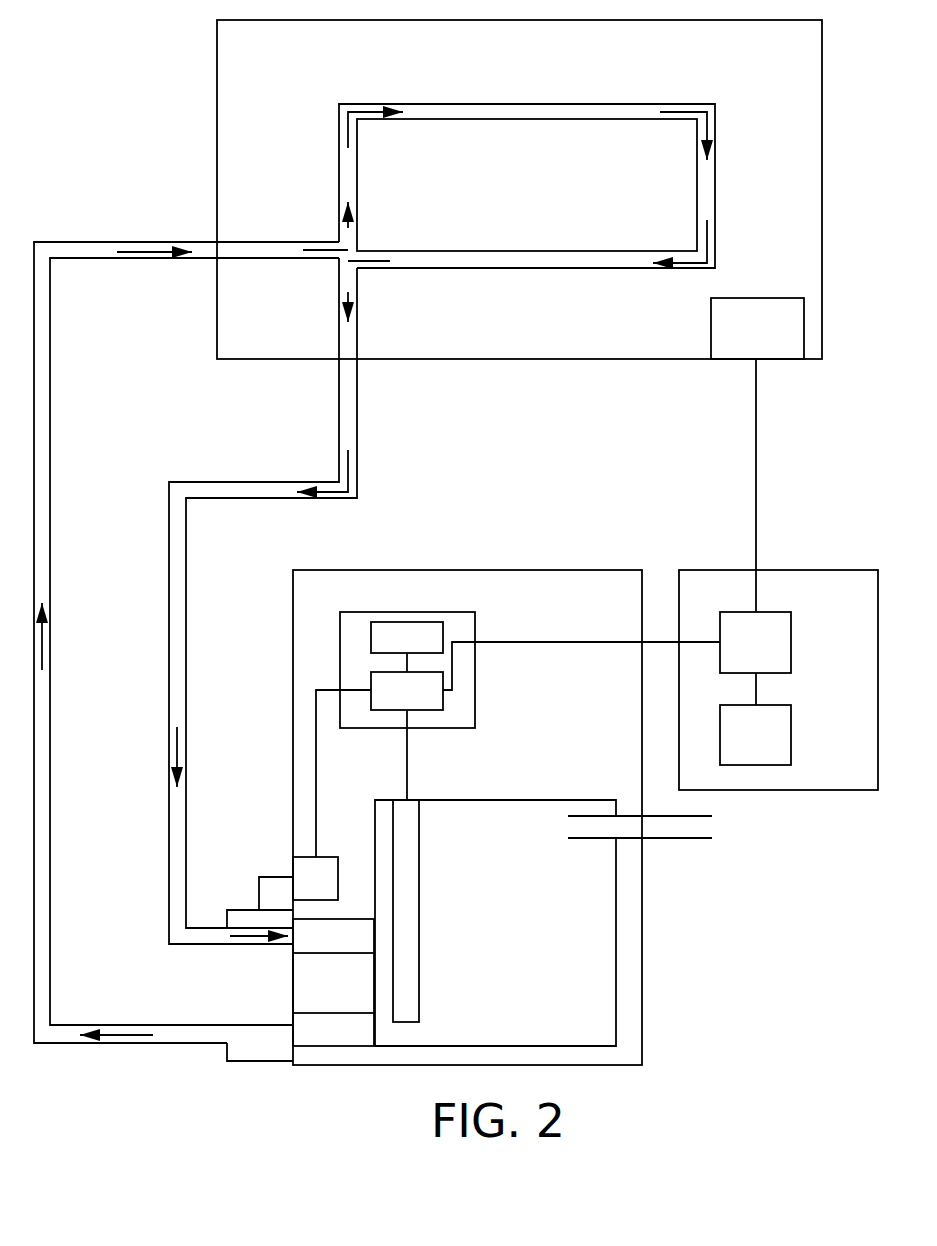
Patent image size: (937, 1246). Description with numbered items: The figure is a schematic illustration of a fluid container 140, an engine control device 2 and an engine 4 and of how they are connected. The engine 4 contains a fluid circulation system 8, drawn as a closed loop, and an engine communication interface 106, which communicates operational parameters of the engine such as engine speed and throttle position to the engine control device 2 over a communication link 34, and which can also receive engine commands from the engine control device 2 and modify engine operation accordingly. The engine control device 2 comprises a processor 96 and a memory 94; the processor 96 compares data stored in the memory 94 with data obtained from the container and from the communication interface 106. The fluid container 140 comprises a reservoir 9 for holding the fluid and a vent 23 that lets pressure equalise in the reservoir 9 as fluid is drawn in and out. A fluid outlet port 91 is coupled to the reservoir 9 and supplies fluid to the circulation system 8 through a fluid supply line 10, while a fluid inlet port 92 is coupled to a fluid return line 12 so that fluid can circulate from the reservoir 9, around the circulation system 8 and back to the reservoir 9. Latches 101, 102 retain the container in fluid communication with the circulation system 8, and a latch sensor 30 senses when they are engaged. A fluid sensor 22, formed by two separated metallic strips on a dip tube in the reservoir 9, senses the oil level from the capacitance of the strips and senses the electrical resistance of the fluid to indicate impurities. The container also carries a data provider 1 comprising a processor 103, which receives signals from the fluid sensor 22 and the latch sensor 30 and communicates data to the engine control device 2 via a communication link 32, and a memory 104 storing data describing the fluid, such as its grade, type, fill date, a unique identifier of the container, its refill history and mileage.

The engine 4 is at (517, 83).
The fluid circulation system 8 is at (537, 122).
The engine communication interface 106 is at (734, 342).
The communication link 34 is at (756, 471).
The engine control device 2 is at (824, 701).
The processor 96 is at (740, 657).
The memory 94 is at (740, 751).
The communication link 32 is at (645, 681).
The fluid container 140 is at (445, 601).
The data provider 1 is at (347, 672).
The memory 104 is at (384, 649).
The processor 103 is at (384, 702).
The latch sensor 30 is at (299, 889).
The latch 101 is at (241, 906).
The fluid inlet port 92 is at (317, 948).
The fluid outlet port 91 is at (317, 1042).
The latch 102 is at (259, 1052).
The reservoir 9 is at (489, 939).
The fluid sensor 22 is at (419, 877).
The vent 23 is at (695, 827).
The fluid supply line 10 is at (50, 745).
The fluid return line 12 is at (169, 683).